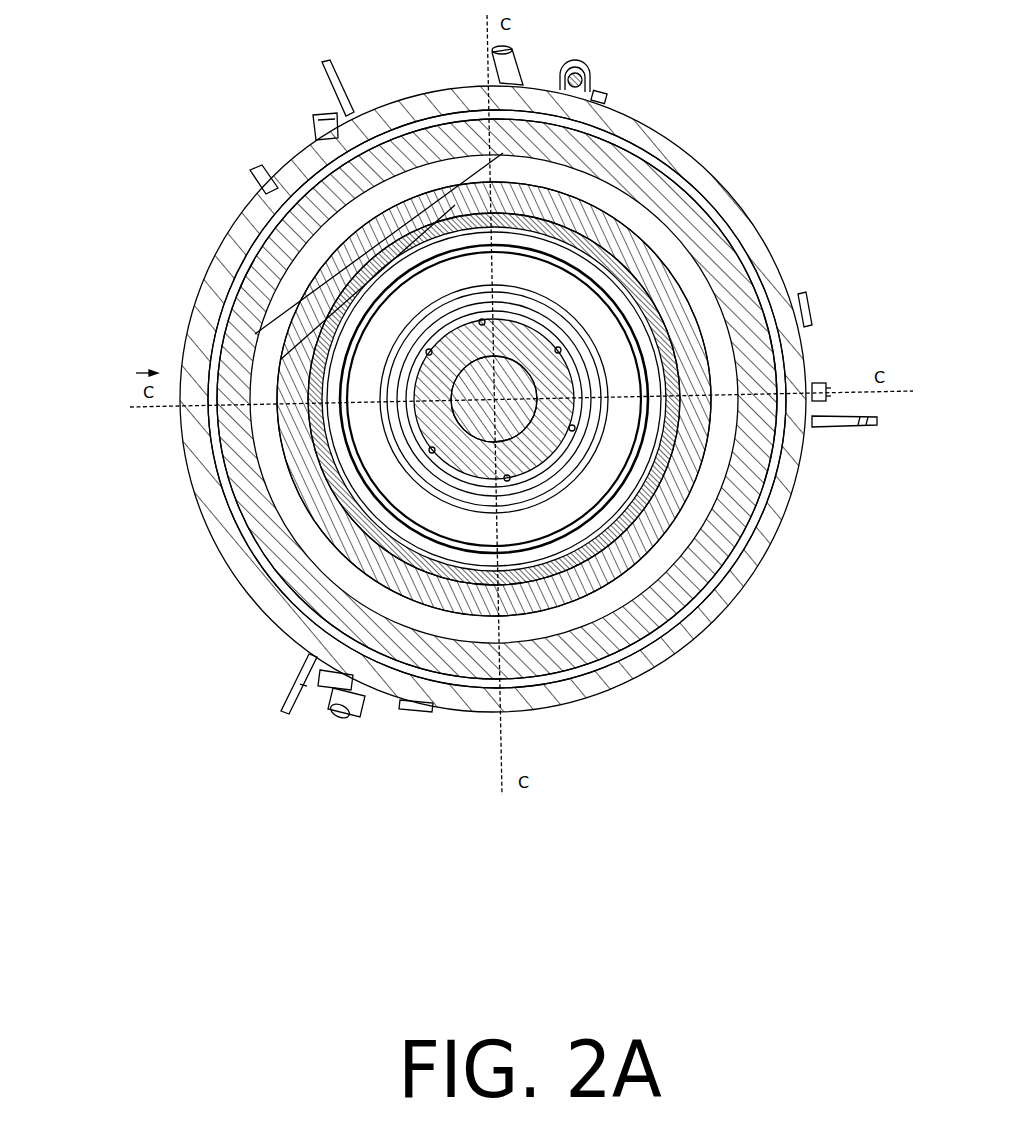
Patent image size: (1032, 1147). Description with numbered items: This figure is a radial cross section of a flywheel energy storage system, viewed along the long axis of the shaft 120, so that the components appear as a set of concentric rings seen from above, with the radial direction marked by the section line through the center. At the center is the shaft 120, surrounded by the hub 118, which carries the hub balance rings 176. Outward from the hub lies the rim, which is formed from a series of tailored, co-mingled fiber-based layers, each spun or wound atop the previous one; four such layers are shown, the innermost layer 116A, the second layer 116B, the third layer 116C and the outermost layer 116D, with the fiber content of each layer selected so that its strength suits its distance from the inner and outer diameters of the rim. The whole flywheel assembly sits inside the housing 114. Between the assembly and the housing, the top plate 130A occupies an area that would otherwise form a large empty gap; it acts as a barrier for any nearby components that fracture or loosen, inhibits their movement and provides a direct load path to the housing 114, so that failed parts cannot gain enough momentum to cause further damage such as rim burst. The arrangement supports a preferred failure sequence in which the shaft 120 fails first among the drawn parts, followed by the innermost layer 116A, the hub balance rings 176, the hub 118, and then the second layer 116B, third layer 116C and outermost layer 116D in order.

The housing 114 is at (774, 264).
The innermost layer of the rim 116A is at (448, 581).
The second layer of the rim 116B is at (448, 603).
The third layer of the rim 116C is at (468, 642).
The outermost layer of the rim 116D is at (508, 677).
The hub 118 is at (423, 443).
The shaft 120 is at (463, 384).
The top plate 130A is at (398, 476).
The hub balance rings 176 is at (390, 529).